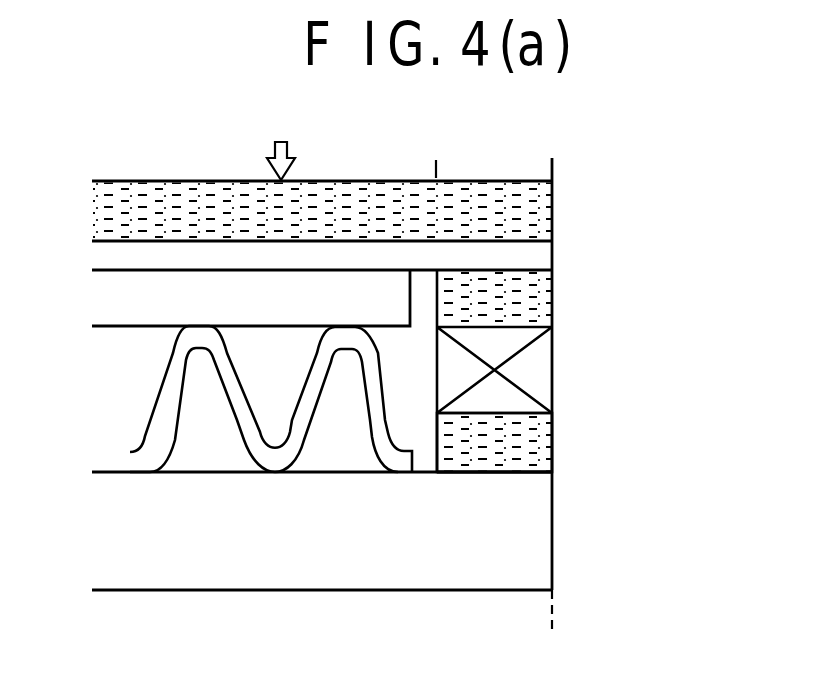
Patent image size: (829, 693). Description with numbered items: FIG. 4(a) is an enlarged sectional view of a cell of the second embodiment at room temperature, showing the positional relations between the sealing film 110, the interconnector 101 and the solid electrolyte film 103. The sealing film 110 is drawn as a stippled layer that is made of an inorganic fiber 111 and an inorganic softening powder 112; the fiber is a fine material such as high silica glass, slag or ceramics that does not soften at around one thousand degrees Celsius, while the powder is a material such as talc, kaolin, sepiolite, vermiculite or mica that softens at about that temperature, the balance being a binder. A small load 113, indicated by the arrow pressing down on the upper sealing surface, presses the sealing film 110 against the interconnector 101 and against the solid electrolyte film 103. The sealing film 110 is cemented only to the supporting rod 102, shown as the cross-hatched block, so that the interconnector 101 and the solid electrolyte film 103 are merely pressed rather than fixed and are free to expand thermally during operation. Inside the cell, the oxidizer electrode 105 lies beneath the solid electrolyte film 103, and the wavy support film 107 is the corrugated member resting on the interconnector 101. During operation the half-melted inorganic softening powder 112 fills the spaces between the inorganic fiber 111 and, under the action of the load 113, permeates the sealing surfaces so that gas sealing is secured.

The interconnector 101 is at (535, 553).
The supporting rod 102 is at (542, 392).
The solid electrolyte film 103 is at (488, 255).
The oxidizer electrode 105 is at (131, 312).
The wavy support film 107 is at (400, 461).
The sealing film 110 is at (503, 414).
The inorganic fiber 111 is at (520, 467).
The inorganic softening powder 112 is at (532, 447).
The load 113 is at (288, 144).